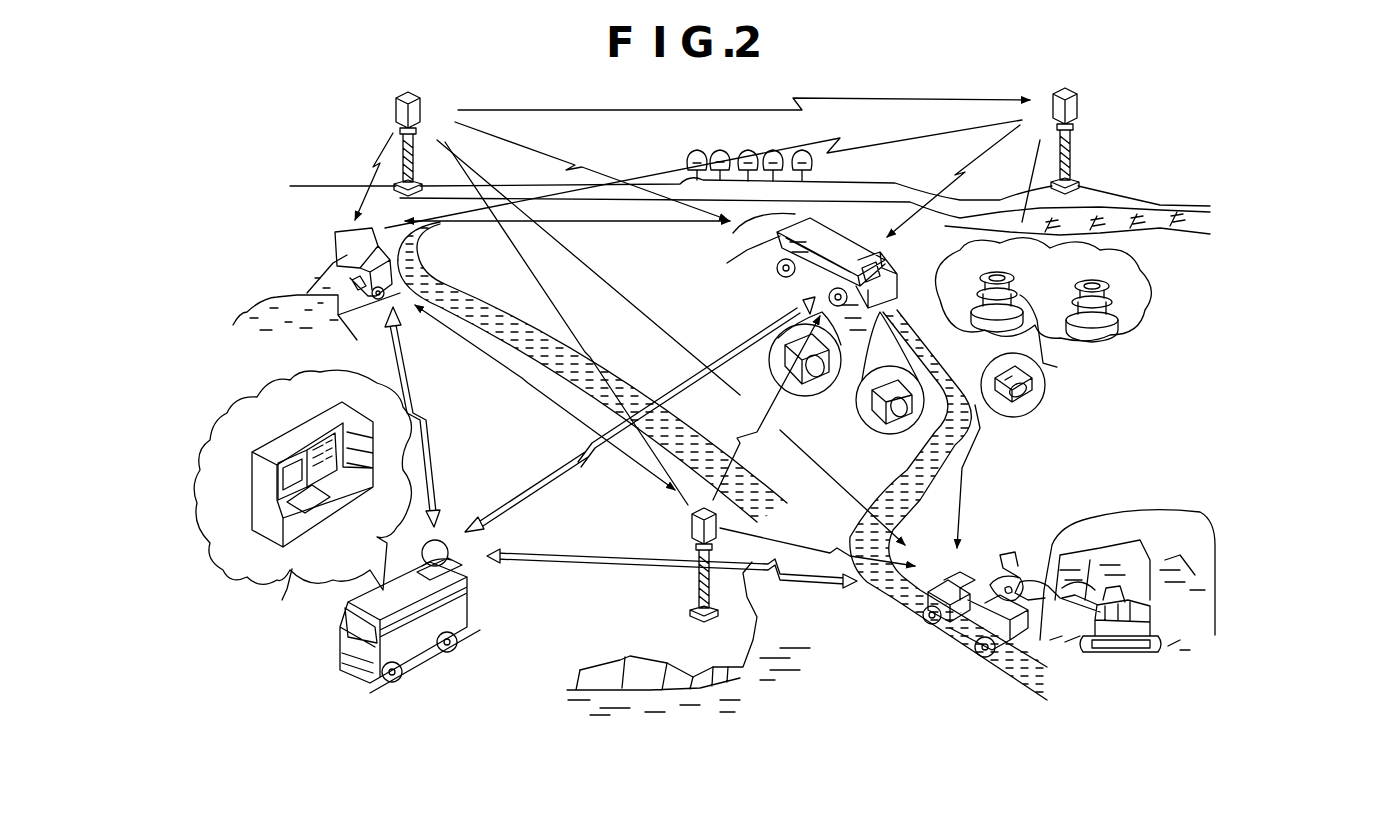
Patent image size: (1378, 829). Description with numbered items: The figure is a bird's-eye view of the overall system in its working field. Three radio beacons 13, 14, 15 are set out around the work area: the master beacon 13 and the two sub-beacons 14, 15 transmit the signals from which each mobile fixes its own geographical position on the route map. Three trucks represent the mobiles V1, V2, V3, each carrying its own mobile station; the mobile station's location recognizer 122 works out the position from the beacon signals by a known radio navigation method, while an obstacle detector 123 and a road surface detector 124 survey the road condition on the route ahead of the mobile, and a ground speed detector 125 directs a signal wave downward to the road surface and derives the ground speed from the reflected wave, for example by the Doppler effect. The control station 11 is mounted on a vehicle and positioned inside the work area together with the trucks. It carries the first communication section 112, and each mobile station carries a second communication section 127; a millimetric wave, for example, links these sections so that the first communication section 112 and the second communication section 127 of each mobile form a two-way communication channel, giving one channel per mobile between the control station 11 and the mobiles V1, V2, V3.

The control station 11 is at (420, 638).
The radio beacon (master beacon) 13 is at (395, 105).
The radio beacon (sub-beacon) 14 is at (1080, 100).
The radio beacon (sub-beacon) 15 is at (690, 532).
The first communication section 112 is at (297, 425).
The location recognizer 122 is at (1145, 316).
The obstacle detector 123 is at (760, 360).
The road surface detector 124 is at (913, 407).
The ground speed detector 125 is at (1033, 398).
The second communication section 127 is at (962, 282).
The mobile (mobile object No. 1) V1 is at (800, 292).
The mobile (mobile object No. 2) V2 is at (960, 639).
The mobile (mobile object No. 3) V3 is at (335, 251).